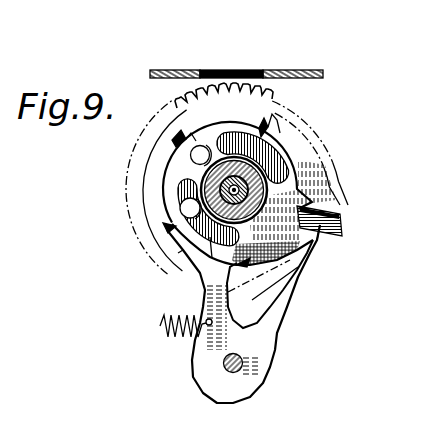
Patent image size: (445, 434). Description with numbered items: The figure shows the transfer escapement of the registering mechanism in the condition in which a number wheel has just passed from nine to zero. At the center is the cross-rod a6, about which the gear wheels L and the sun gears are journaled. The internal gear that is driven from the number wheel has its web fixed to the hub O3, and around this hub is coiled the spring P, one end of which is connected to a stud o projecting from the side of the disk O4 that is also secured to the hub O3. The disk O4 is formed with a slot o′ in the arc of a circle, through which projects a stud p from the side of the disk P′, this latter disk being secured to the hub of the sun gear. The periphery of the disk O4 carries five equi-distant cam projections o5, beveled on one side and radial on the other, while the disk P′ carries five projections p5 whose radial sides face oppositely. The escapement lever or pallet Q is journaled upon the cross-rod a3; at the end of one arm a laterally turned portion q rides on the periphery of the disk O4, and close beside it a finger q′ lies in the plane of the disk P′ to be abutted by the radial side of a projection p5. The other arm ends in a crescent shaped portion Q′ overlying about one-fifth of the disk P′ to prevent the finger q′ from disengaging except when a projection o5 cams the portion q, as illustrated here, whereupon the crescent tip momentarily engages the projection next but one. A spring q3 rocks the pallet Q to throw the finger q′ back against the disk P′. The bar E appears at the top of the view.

The escapement bar E is at (173, 69).
The gear wheel L is at (256, 84).
The disk O4 is at (305, 203).
The disk P′ is at (259, 166).
The hub O3 is at (185, 190).
The spring P is at (268, 195).
The cross-rod a6 is at (216, 170).
The stud o is at (191, 155).
The stud p is at (181, 208).
The projection p5 is at (268, 124).
The cam projection o5 is at (178, 209).
The escapement lever or pallet Q is at (278, 336).
The laterally turned portion q is at (322, 198).
The finger q′ is at (322, 270).
The crescent shaped end-portion Q′ is at (178, 253).
The slot o′ is at (210, 237).
The spring q3 is at (179, 343).
The cross-rod a3 is at (240, 373).